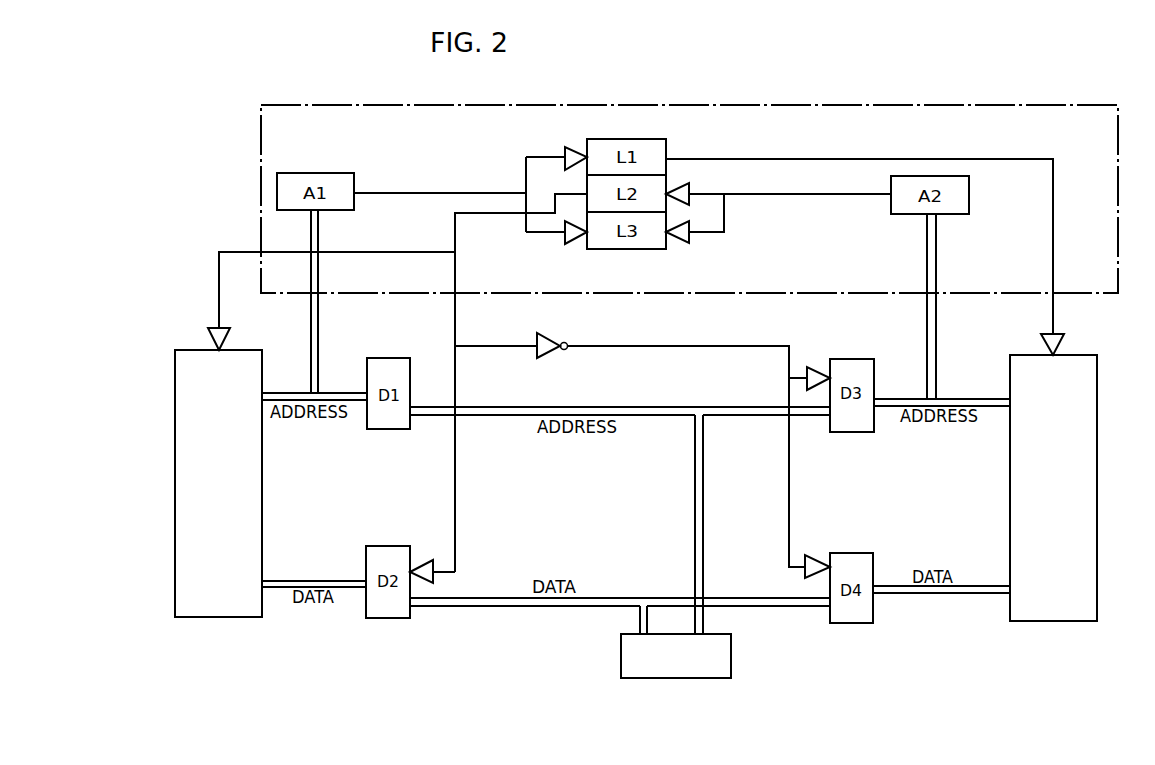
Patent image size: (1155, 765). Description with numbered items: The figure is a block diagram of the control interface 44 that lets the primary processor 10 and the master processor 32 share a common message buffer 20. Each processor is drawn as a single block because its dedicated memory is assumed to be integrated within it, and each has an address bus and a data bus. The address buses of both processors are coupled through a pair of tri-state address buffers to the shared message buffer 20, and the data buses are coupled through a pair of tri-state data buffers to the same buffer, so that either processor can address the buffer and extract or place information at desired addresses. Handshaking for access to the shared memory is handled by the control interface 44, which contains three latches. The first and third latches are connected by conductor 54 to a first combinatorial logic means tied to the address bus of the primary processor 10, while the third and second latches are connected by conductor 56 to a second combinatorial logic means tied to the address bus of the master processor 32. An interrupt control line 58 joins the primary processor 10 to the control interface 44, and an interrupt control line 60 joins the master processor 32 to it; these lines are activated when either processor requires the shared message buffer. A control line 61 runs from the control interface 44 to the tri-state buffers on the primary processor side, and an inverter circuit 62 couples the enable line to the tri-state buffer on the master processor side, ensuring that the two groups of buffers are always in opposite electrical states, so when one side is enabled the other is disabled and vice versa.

The primary processor 10 is at (175, 413).
The master processor 32 is at (1097, 443).
The message buffer 20 is at (731, 661).
The control interface 44 is at (1048, 106).
The conductor 54 is at (424, 193).
The conductor 56 is at (804, 194).
The interrupt control line 58 is at (219, 296).
The interrupt control line 60 is at (877, 246).
The control line 61 is at (474, 277).
The inverter circuit 62 is at (555, 335).